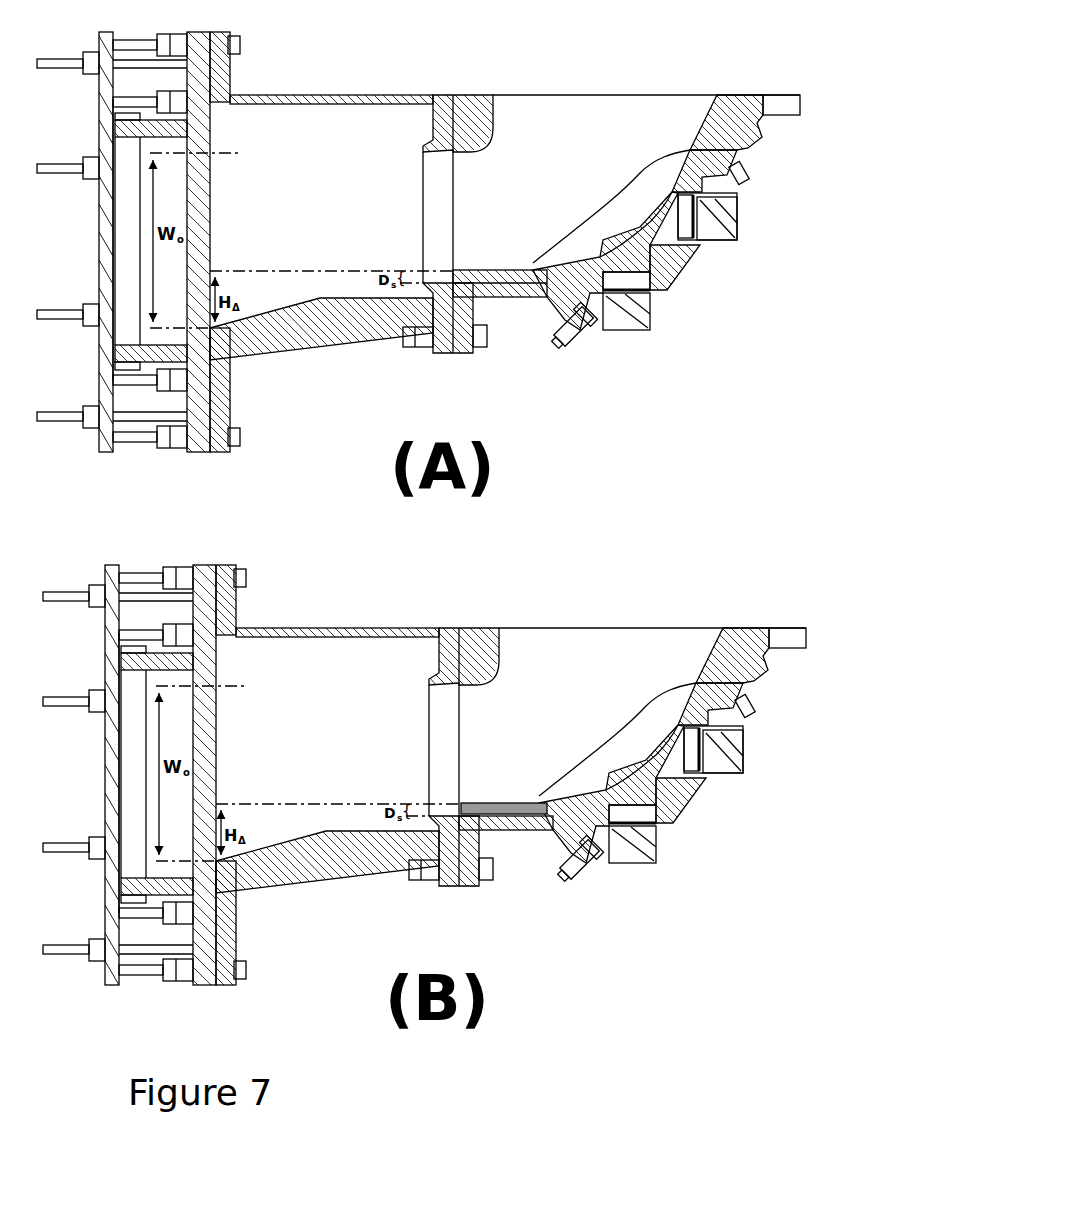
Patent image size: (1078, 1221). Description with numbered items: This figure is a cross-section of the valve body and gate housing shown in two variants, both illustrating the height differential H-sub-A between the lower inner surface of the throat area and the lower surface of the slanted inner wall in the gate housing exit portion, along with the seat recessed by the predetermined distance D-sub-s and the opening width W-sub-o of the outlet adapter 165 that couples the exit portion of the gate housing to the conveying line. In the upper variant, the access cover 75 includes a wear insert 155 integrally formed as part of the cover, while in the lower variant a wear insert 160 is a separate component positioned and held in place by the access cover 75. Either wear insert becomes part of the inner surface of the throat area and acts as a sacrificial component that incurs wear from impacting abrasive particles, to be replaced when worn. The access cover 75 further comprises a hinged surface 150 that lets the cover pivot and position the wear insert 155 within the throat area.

The outlet adapter 165 is at (193, 83).
The wear insert 155 is at (520, 300).
The wear insert 160 is at (512, 815).
The hinged surface 150 is at (578, 350).
The access cover 75 is at (670, 265).